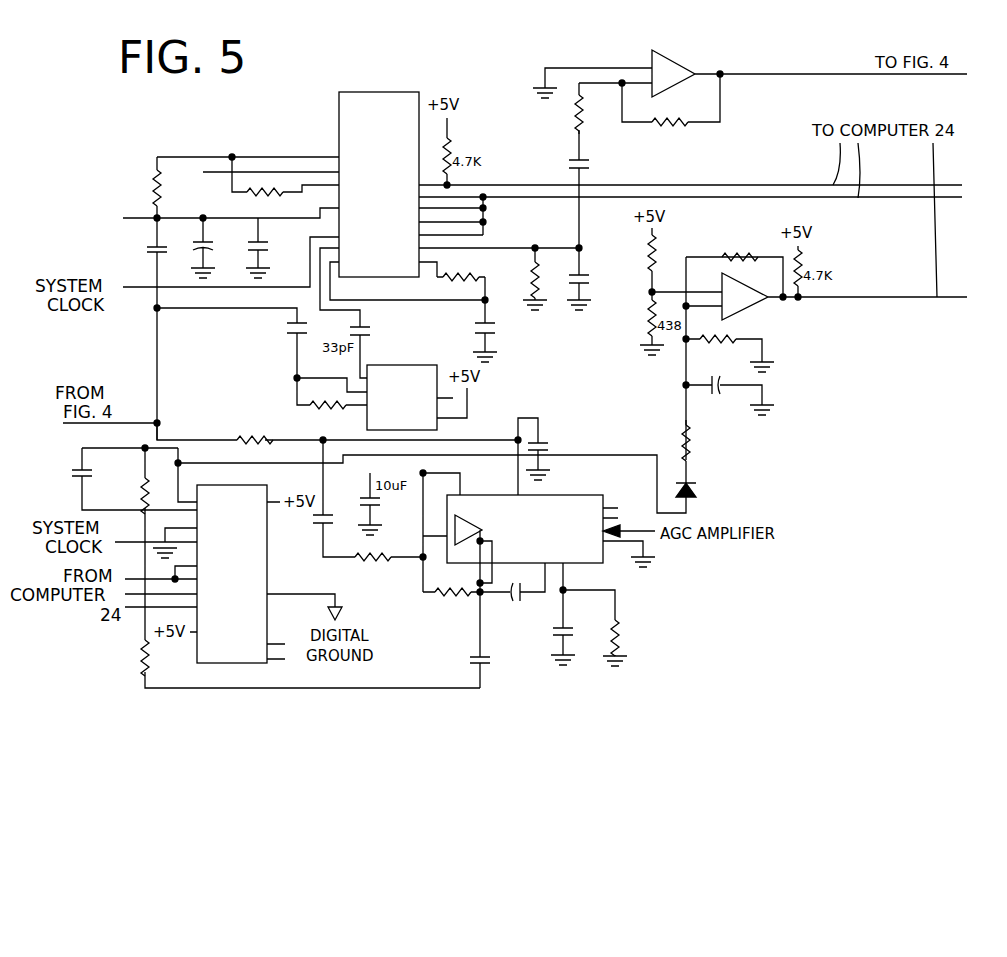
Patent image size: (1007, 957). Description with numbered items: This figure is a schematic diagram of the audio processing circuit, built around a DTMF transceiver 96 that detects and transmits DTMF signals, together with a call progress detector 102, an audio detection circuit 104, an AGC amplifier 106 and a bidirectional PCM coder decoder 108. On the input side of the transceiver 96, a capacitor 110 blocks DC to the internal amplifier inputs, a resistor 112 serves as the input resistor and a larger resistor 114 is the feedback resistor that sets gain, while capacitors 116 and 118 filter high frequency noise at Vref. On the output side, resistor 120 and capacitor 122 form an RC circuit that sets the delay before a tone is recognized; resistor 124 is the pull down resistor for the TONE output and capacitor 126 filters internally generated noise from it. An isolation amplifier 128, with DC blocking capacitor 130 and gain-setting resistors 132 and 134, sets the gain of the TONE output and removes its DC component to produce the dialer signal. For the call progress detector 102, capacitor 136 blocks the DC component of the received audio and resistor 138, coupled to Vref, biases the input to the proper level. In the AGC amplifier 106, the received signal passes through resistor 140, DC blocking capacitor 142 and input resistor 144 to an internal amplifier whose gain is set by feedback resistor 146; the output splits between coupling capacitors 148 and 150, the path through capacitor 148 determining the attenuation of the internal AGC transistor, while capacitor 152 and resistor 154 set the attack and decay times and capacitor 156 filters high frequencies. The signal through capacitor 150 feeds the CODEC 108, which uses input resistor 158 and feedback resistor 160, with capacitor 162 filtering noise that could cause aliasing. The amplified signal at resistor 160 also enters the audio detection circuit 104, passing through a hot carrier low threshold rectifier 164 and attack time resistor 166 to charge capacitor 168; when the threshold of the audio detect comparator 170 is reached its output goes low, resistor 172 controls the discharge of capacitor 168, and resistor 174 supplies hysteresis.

The DTMF transceiver 96 is at (384, 92).
The call progress detector 102 is at (410, 365).
The audio detection circuit 104 is at (832, 257).
The AGC amplifier 106 is at (560, 495).
The bidirectional PCM coder decoder (CODEC) 108 is at (268, 575).
The capacitor 110 is at (156, 254).
The resistor 112 is at (152, 186).
The resistor 114 is at (266, 190).
The capacitor 116 is at (200, 250).
The capacitor 118 is at (256, 252).
The resistor 120 is at (470, 276).
The capacitor 122 is at (484, 322).
The resistor 124 is at (548, 290).
The capacitor 126 is at (595, 282).
The isolation amplifier 128 is at (676, 58).
The DC blocking capacitor 130 is at (575, 158).
The resistor 132 is at (577, 112).
The resistor 134 is at (665, 128).
The capacitor 136 is at (292, 338).
The resistor 138 is at (318, 418).
The resistor 140 is at (242, 436).
The DC blocking capacitor 142 is at (316, 518).
The input resistor 144 is at (378, 560).
The feedback resistor 146 is at (446, 597).
The coupling capacitor 148 is at (508, 602).
The coupling capacitor 150 is at (476, 652).
The capacitor 152 is at (552, 640).
The resistor 154 is at (622, 633).
The capacitor 156 is at (542, 438).
The resistor 158 is at (138, 655).
The resistor 160 is at (138, 470).
The capacitor 162 is at (72, 473).
The hot carrier low threshold rectifier 164 is at (700, 490).
The audio detector attack time resistor 166 is at (682, 430).
The capacitor 168 is at (726, 392).
The audio detect comparator 170 is at (745, 305).
The resistor 172 is at (735, 333).
The resistor 174 is at (735, 255).